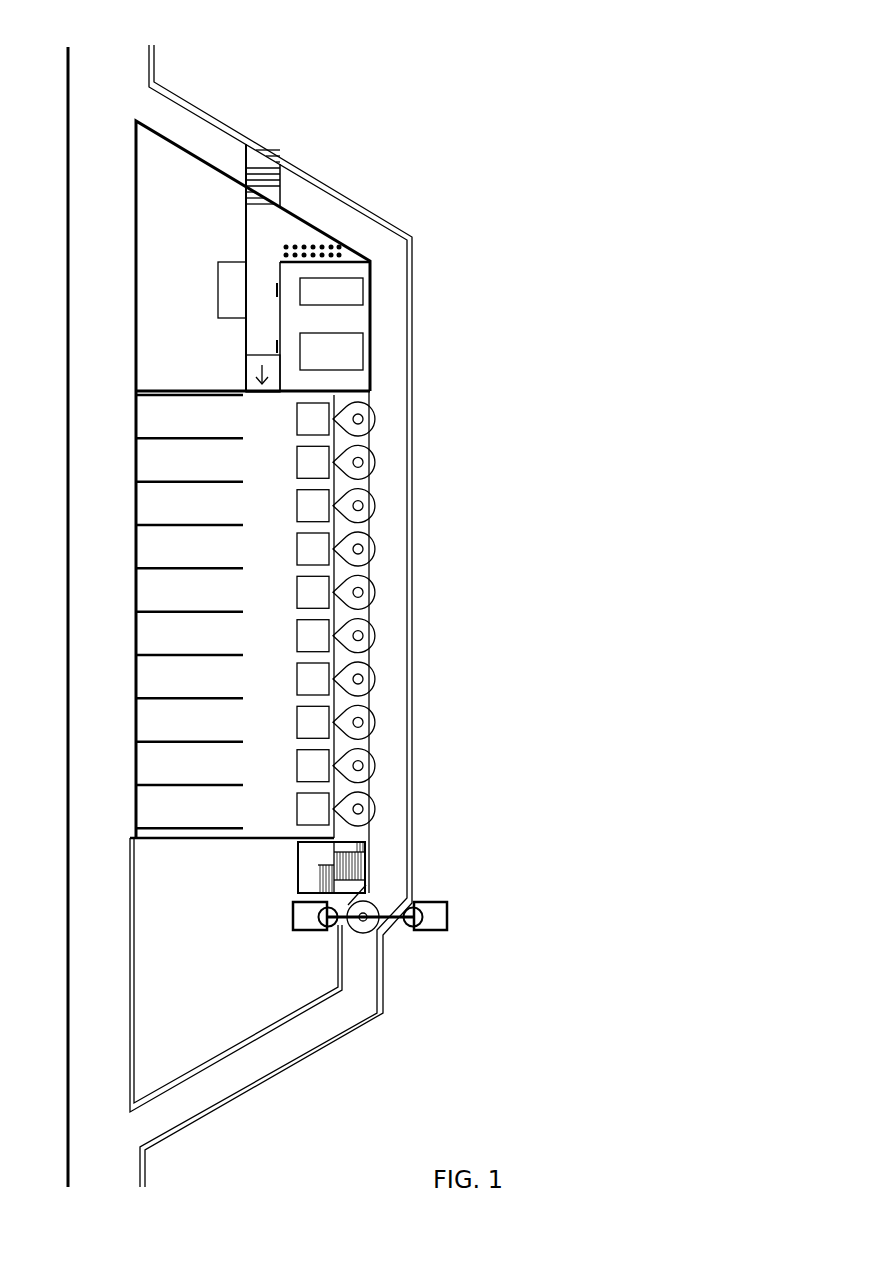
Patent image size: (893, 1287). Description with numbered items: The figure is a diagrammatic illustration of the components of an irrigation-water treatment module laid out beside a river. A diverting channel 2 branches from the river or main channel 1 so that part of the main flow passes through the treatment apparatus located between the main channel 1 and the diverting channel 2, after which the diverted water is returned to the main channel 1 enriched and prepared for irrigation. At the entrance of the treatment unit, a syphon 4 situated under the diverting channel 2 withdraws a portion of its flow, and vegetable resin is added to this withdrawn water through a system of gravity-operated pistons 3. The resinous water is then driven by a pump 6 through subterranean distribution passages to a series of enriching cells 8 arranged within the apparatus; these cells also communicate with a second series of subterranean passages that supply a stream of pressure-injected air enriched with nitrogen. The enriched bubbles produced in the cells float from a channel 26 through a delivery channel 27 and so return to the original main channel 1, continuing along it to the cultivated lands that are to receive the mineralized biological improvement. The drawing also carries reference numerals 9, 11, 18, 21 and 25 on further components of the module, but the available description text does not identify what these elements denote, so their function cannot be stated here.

The main channel 1 is at (117, 610).
The diverting channel 2 is at (258, 1068).
The gravity-operated pistons 3 is at (318, 932).
The syphon 4 is at (368, 921).
The pump 6 is at (348, 860).
The enriching cells 8 is at (363, 506).
The control unit 9 is at (340, 293).
The control unit 11 is at (333, 355).
The container 18 is at (313, 462).
The conveyor chain 21 is at (338, 810).
The storage shelf 25 is at (180, 593).
The channel 26 is at (387, 615).
The delivery channel 27 is at (317, 205).